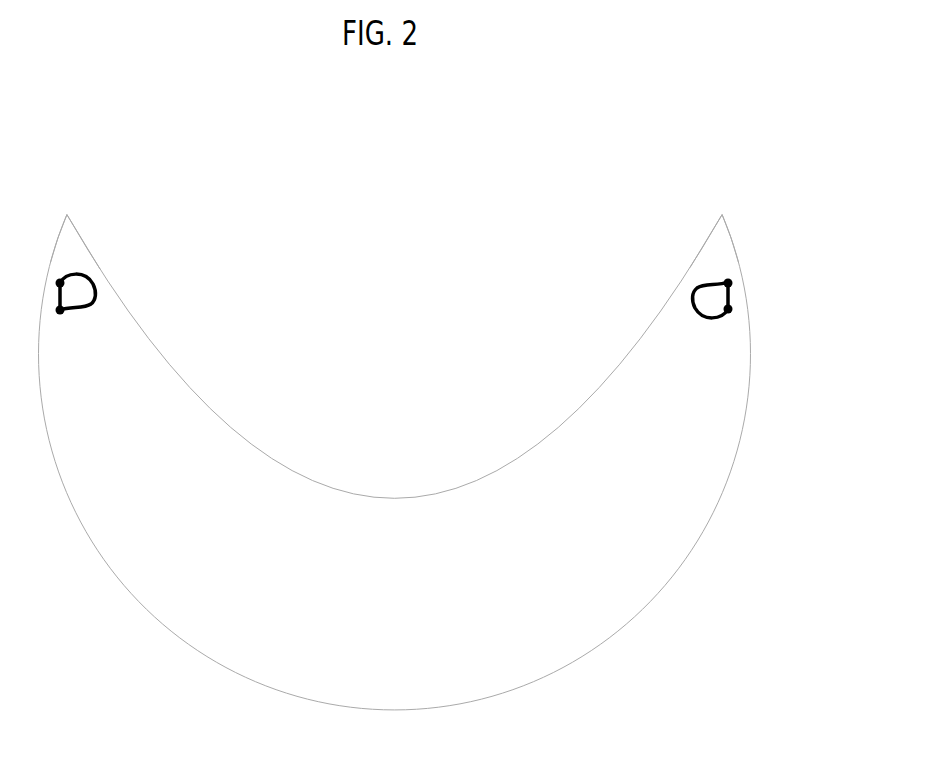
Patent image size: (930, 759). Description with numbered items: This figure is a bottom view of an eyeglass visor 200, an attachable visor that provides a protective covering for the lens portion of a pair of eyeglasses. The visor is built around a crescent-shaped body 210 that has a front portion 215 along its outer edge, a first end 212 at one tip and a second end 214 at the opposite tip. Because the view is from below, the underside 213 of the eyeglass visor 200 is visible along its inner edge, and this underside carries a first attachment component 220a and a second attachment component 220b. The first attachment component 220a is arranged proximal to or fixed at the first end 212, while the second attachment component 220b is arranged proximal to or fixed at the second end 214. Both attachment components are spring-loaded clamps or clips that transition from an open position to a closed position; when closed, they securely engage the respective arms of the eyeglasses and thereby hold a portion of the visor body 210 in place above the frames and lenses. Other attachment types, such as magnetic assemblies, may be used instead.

The eyeglass visor 200 is at (573, 192).
The body 210 is at (563, 679).
The first end 212 is at (732, 193).
The underside 213 is at (308, 505).
The second end 214 is at (73, 211).
The front portion 215 is at (385, 692).
The first attachment component 220a is at (720, 265).
The second attachment component 220b is at (80, 260).